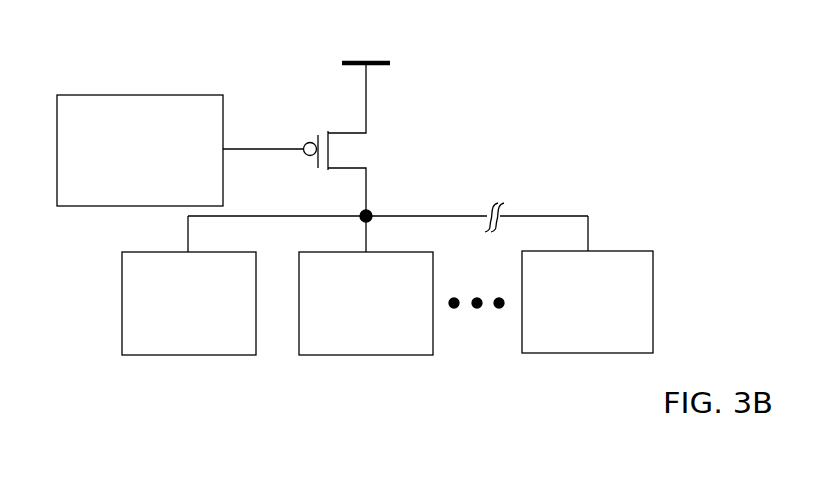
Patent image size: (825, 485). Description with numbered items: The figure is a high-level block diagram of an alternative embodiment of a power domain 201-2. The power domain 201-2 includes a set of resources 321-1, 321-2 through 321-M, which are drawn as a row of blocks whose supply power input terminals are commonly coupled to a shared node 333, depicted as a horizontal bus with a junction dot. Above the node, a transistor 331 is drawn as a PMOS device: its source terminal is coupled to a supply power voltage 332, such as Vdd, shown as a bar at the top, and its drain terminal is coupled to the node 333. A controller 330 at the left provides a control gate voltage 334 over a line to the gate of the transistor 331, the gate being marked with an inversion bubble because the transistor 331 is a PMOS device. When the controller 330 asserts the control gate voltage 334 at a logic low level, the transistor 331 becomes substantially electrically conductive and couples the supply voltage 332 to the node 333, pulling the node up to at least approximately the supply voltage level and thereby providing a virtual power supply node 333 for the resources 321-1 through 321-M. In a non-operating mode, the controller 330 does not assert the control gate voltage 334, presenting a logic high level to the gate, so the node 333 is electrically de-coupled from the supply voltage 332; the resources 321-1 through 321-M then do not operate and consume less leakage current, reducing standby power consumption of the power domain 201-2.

The power domain 201-2 is at (682, 64).
The controller 330 is at (127, 166).
The transistor 331 is at (368, 152).
The supply power voltage 332 is at (392, 63).
The node 333 is at (371, 213).
The control gate voltage 334 is at (288, 148).
The resource 321-1 is at (171, 319).
The resource 321-2 is at (348, 319).
The resource 321-M is at (569, 318).